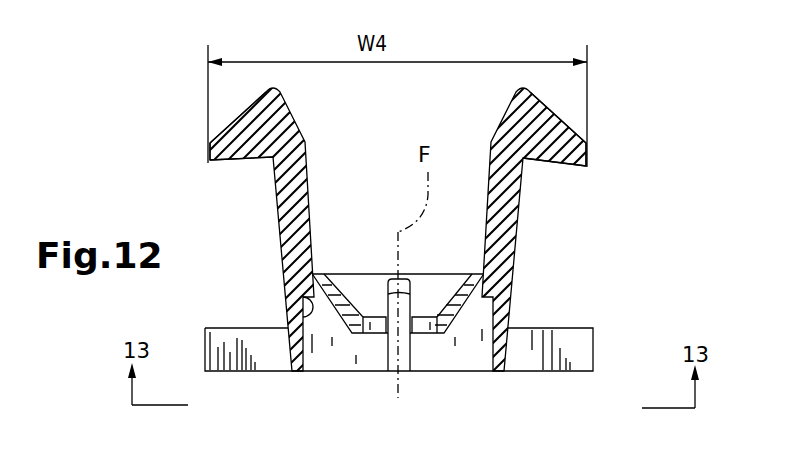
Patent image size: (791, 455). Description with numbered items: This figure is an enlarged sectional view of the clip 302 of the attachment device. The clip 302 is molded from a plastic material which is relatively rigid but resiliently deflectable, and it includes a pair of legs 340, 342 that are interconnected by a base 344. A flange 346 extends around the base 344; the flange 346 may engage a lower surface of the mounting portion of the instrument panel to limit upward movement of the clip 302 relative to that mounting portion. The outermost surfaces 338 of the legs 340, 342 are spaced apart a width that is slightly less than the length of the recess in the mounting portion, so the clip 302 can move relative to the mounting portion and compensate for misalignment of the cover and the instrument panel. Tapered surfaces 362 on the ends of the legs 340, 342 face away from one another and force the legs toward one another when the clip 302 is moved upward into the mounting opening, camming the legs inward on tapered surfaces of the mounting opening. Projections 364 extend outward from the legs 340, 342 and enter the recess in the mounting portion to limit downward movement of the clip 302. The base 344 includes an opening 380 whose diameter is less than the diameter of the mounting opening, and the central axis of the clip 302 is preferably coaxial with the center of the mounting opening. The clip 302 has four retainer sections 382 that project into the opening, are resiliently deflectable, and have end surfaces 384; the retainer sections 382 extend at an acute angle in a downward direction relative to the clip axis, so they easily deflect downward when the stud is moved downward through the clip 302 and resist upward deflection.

The clip 302 is at (586, 238).
The outermost surfaces 338 is at (210, 157).
The leg 340 is at (278, 219).
The leg 342 is at (522, 201).
The base 344 is at (327, 350).
The flange 346 is at (572, 342).
The tapered surfaces 362 is at (232, 124).
The projections 364 is at (237, 139).
The opening 380 is at (288, 307).
The retainer sections 382 is at (442, 290).
The end surfaces 384 is at (372, 327).